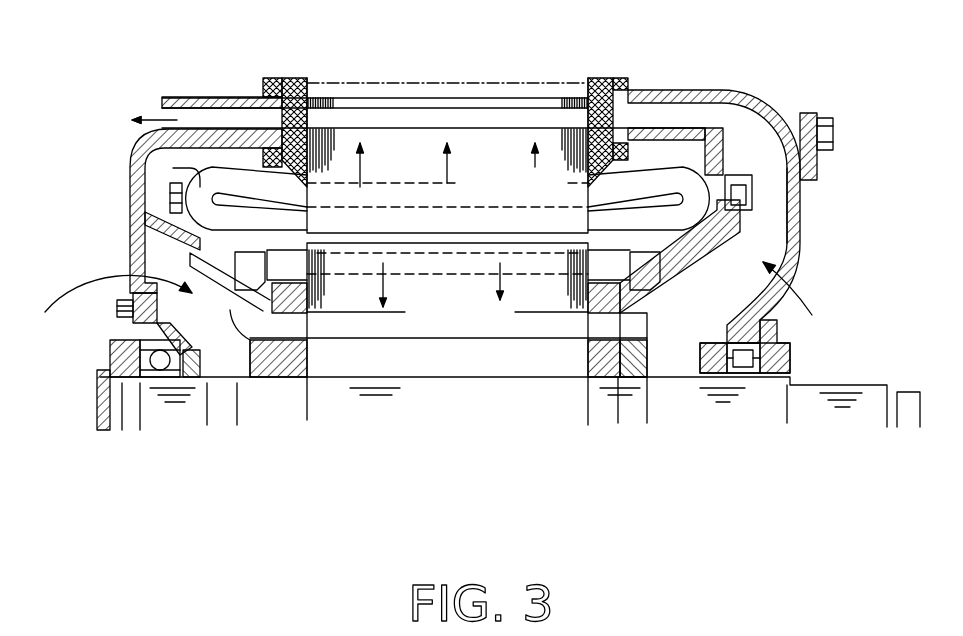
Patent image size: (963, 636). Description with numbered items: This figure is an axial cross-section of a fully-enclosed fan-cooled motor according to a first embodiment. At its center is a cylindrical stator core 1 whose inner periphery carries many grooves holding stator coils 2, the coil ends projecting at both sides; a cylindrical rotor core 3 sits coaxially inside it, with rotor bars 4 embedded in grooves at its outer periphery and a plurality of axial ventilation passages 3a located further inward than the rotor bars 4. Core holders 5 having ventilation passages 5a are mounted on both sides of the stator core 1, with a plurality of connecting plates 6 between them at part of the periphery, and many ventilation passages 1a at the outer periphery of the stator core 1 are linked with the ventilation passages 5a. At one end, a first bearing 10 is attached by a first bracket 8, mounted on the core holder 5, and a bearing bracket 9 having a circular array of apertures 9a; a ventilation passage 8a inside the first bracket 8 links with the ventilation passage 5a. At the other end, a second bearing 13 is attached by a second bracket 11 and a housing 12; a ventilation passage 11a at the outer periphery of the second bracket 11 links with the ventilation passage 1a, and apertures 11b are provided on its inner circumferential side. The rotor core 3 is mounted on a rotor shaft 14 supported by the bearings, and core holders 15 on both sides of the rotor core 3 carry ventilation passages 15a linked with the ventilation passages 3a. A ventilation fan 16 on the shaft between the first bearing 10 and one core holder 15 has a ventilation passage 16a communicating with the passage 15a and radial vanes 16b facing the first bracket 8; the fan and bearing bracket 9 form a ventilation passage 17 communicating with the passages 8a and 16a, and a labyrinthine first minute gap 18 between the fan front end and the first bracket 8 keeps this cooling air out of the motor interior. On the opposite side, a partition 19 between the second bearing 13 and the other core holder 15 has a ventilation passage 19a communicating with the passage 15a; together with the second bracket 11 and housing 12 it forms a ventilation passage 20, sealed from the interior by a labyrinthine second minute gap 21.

The stator core 1 is at (462, 140).
The ventilation passages 1a is at (397, 115).
The stator coils 2 is at (760, 128).
The rotor core 3 is at (513, 328).
The ventilation passages 3a is at (477, 328).
The rotor bars 4 is at (412, 265).
The core holders 5 is at (293, 117).
The ventilation passages 5a is at (282, 80).
The connecting plates 6 is at (525, 83).
The first bracket 8 is at (720, 90).
The ventilation passage 8a is at (660, 115).
The bearing bracket 9 is at (802, 228).
The apertures 9a is at (792, 270).
The first bearing 10 is at (745, 375).
The second bracket 11 is at (130, 165).
The ventilation passage 11a is at (200, 115).
The apertures 11b is at (130, 258).
The housing 12 is at (135, 332).
The second bearing 13 is at (150, 385).
The rotor shaft 14 is at (390, 385).
The core holders 15 is at (300, 335).
The ventilation passages 15a is at (318, 342).
The ventilation fan 16 is at (665, 290).
The ventilation passage 16a is at (637, 345).
The radial vanes 16b is at (770, 207).
The ventilation passage 17 is at (705, 375).
The first minute gap 18 is at (805, 150).
The partition 19 is at (205, 325).
The ventilation passage 19a is at (260, 327).
The ventilation passage 20 is at (187, 383).
The second minute gap 21 is at (143, 253).